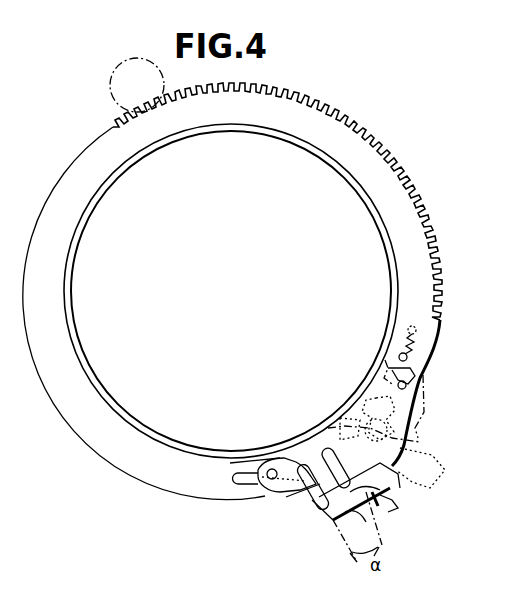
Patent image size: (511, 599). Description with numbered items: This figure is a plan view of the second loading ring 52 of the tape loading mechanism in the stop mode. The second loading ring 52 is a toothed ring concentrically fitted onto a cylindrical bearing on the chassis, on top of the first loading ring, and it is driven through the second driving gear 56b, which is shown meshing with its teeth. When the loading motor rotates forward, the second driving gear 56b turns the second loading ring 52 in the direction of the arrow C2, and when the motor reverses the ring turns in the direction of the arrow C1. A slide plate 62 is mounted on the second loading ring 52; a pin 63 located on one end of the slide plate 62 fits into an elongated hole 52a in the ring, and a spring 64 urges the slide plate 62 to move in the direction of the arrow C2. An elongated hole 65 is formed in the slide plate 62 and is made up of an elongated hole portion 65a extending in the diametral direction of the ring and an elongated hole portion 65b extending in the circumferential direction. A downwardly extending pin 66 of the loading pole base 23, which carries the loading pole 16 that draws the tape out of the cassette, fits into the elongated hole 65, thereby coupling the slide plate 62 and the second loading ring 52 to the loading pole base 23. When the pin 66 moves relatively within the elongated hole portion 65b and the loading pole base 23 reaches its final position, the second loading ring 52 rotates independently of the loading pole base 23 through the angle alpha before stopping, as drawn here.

The second loading ring 52 is at (368, 92).
The elongated hole 52a is at (244, 486).
The second driving gear 56b is at (112, 92).
The loading pole 16 is at (404, 448).
The spring 64 is at (410, 368).
The loading pole base 23 is at (357, 393).
The pin 63 is at (271, 469).
The elongated hole 65 is at (344, 518).
The elongated hole portion 65a is at (307, 486).
The elongated hole portion 65b is at (374, 507).
The downwardly extending pin 66 is at (385, 498).
The slide plate 62 is at (362, 526).
The arrow C1 is at (489, 260).
The arrow C2 is at (468, 233).